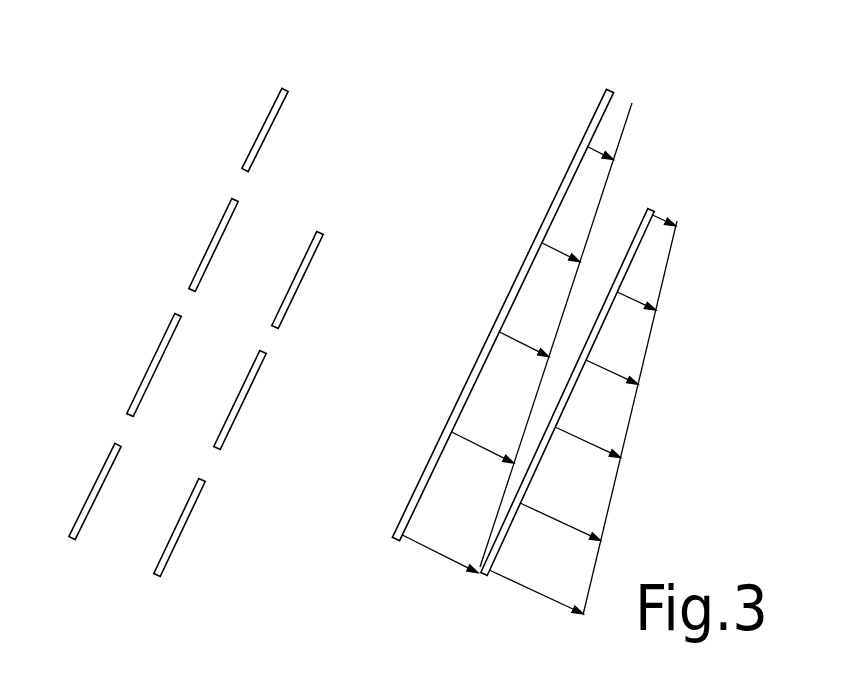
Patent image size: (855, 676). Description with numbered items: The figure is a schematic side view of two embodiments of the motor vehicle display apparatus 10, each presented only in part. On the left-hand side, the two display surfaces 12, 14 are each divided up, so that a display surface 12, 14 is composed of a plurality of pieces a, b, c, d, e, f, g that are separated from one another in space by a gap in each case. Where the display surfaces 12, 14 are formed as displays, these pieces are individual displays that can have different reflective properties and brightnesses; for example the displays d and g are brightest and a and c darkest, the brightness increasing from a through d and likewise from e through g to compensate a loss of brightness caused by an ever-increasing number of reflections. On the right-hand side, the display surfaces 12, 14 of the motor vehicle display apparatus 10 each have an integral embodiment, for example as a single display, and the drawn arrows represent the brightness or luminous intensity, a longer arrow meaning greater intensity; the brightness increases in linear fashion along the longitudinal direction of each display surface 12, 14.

The motor vehicle display apparatus 10 is at (295, 175).
The display surface 12 is at (165, 297).
The display surface 14 is at (300, 323).